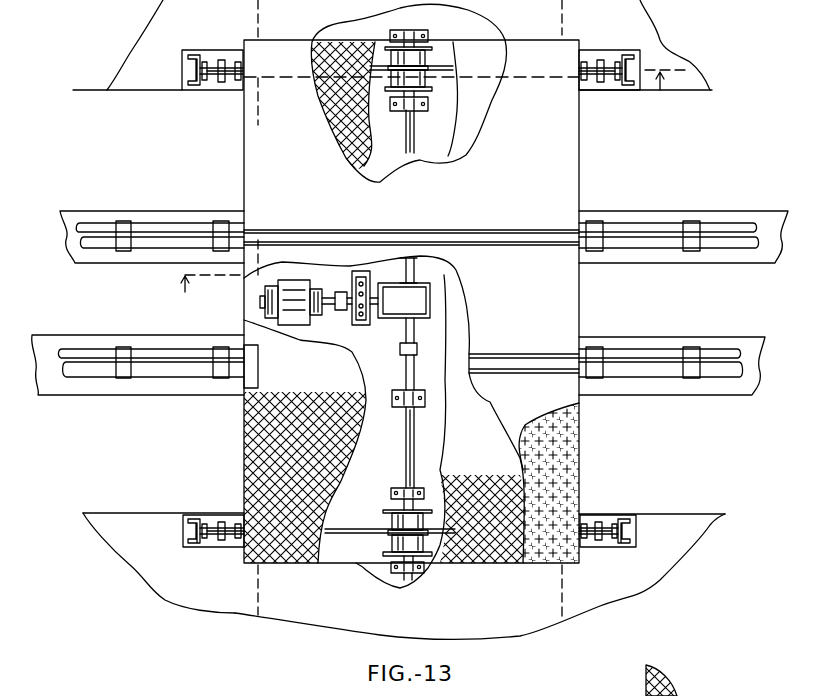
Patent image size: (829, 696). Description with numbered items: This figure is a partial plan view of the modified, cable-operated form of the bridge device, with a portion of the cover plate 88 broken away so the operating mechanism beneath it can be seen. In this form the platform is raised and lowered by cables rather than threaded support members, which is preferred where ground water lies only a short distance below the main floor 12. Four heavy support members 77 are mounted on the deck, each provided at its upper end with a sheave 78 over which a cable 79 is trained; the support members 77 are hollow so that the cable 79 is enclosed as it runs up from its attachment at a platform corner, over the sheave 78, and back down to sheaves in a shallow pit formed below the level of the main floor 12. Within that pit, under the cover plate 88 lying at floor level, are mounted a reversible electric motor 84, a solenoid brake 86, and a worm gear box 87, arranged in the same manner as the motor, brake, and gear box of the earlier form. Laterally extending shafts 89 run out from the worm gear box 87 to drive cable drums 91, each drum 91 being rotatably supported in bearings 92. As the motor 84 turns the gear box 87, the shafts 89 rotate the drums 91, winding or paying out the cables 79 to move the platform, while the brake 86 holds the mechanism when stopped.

The main floor 12 is at (433, 185).
The support member 77 is at (482, 695).
The sheave 78 is at (596, 695).
The cable 79 is at (440, 67).
The reversible electric motor 84 is at (311, 283).
The solenoid brake 86 is at (354, 276).
The worm gear box 87 is at (418, 300).
The cover plate 88 is at (264, 455).
The shaft 89 is at (408, 440).
The cable drum 91 is at (420, 48).
The bearing 92 is at (402, 32).